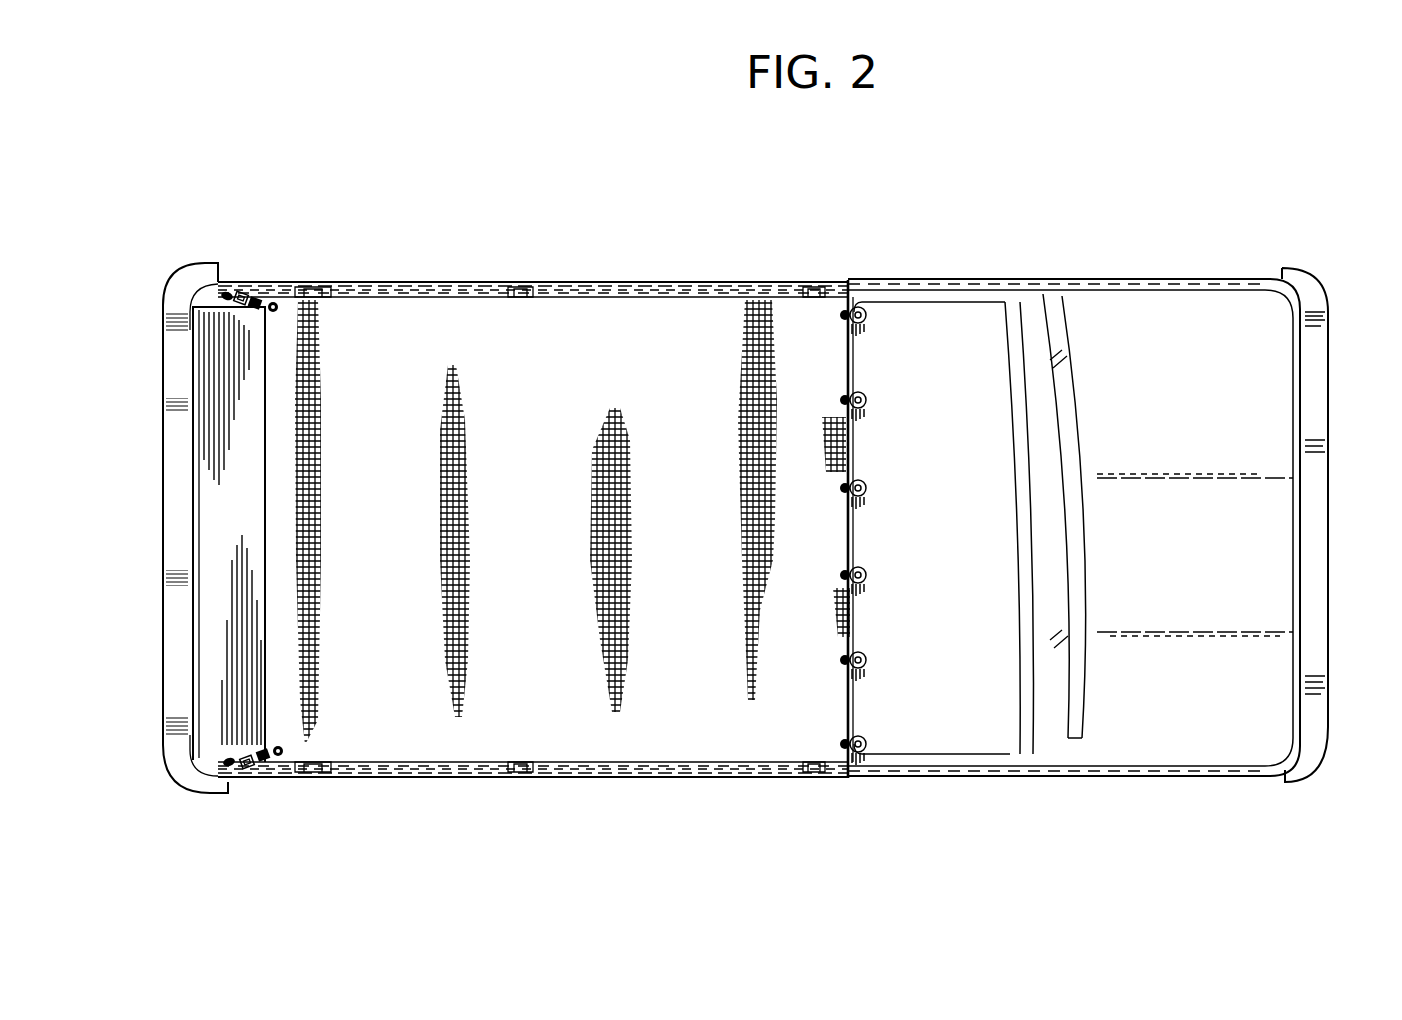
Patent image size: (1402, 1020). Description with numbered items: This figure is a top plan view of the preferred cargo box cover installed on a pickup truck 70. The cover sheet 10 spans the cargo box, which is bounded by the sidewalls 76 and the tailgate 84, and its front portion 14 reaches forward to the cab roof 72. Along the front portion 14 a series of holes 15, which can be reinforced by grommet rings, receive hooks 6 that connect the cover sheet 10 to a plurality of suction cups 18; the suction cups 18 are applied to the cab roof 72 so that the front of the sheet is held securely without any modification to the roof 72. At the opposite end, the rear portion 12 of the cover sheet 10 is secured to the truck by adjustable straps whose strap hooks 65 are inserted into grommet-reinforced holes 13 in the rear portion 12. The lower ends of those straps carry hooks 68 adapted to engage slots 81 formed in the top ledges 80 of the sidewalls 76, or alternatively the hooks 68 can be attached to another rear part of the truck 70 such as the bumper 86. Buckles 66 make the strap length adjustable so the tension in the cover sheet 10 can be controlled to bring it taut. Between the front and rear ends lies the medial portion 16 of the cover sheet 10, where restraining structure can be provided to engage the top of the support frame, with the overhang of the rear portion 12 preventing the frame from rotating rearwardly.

The hooks 6 is at (852, 324).
The cover sheet 10 is at (722, 306).
The rear portion 12 is at (276, 480).
The grommet-reinforced holes 13 is at (279, 303).
The front portion 14 is at (840, 455).
The holes 15 is at (840, 316).
The medial portion 16 is at (313, 376).
The suction cups 18 is at (866, 318).
The strap hooks 65 is at (260, 302).
The buckles 66 is at (243, 296).
The hooks 68 is at (229, 292).
The pickup truck 70 is at (1130, 302).
The cab roof 72 is at (967, 438).
The sidewalls 76 is at (465, 283).
The top ledges 80 is at (578, 284).
The slots 81 is at (527, 772).
The tailgate 84 is at (198, 688).
The bumper 86 is at (177, 392).